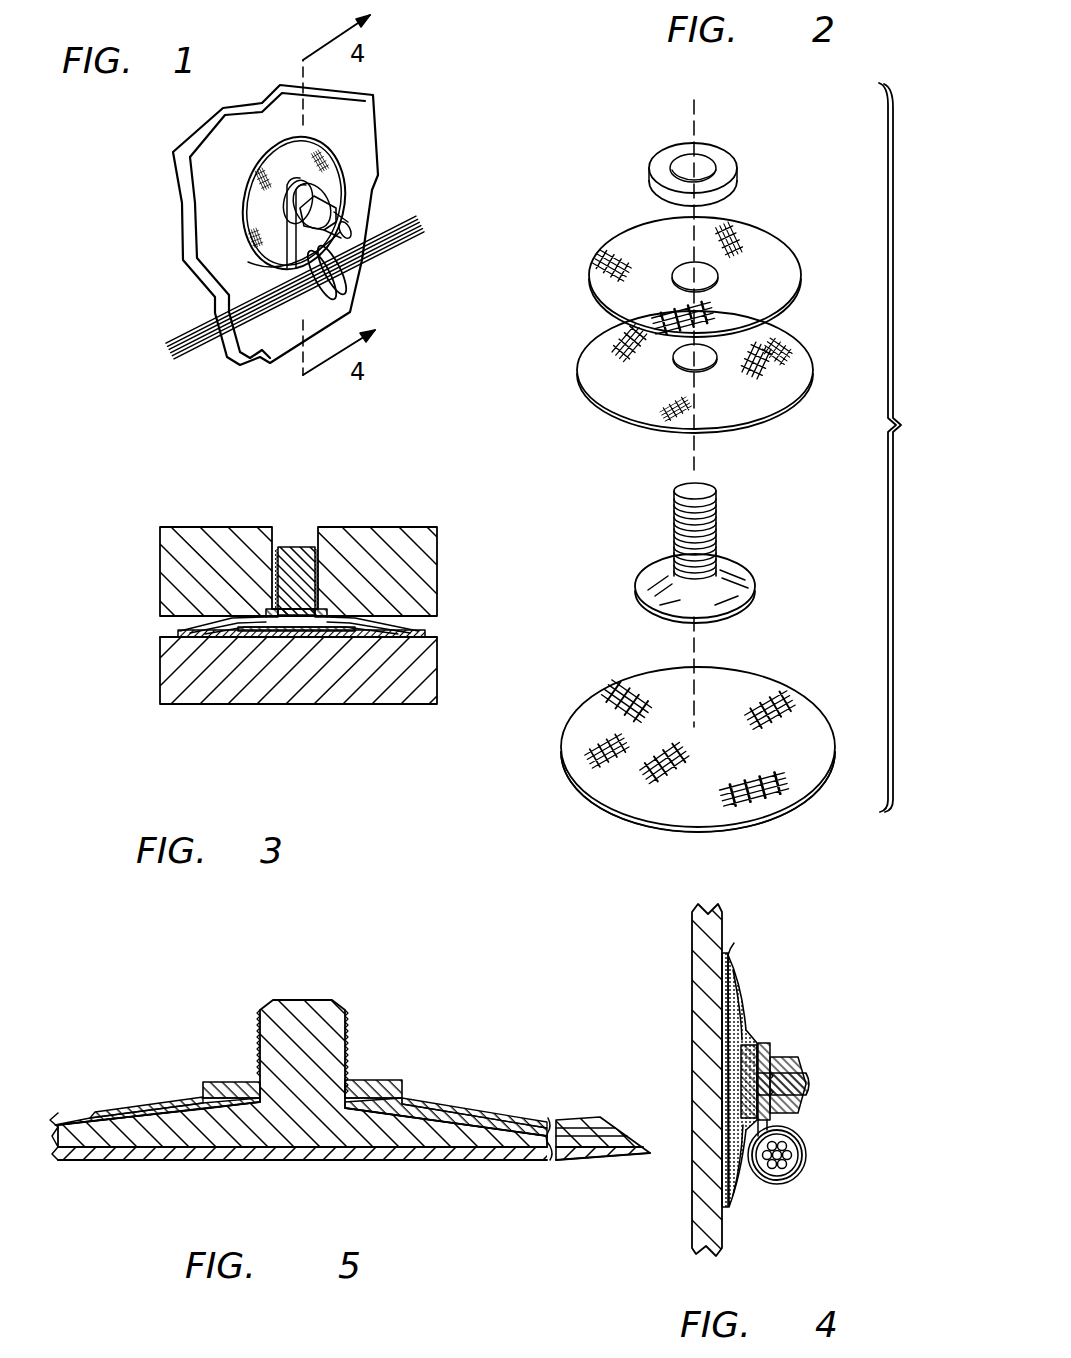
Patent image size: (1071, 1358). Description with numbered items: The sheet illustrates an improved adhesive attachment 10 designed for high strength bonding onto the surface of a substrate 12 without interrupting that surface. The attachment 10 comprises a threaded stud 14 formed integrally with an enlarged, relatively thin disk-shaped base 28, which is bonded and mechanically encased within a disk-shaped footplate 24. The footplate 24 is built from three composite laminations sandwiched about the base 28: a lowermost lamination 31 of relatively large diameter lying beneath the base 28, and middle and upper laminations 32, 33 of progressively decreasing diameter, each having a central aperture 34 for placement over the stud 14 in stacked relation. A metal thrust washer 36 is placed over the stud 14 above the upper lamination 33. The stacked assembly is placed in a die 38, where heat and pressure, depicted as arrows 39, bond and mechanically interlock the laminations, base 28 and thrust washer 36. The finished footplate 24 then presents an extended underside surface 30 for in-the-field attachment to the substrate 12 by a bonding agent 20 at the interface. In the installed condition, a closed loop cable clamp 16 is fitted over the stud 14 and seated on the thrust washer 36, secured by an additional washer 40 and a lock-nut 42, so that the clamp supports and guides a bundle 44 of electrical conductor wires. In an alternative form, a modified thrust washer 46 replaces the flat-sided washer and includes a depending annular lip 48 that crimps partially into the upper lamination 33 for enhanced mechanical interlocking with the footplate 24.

In FIG. 1, the adhesive attachment 10 is at (362, 173).
In FIG. 2, the adhesive attachment 10 is at (870, 402).
In FIG. 3, the adhesive attachment 10 is at (380, 613).
In FIG. 4, the adhesive attachment 10 is at (769, 1019).
In FIG. 1, the substrate 12 is at (197, 202).
In FIG. 4, the substrate 12 is at (712, 927).
In FIG. 1, the threaded stud 14 is at (350, 228).
In FIG. 2, the threaded stud 14 is at (712, 519).
In FIG. 3, the threaded stud 14 is at (318, 547).
In FIG. 5, the threaded stud 14 is at (340, 1018).
In FIG. 4, the threaded stud 14 is at (810, 1083).
In FIG. 1, the cable clamp 16 is at (342, 289).
In FIG. 4, the cable clamp 16 is at (802, 1170).
In FIG. 1, the bonding agent 20 is at (260, 180).
In FIG. 4, the bonding agent 20 is at (727, 953).
In FIG. 1, the footplate 24 is at (330, 155).
In FIG. 2, the footplate 24 is at (596, 812).
In FIG. 5, the footplate 24 is at (525, 1106).
In FIG. 4, the footplate 24 is at (745, 982).
In FIG. 2, the base 28 is at (750, 577).
In FIG. 3, the base 28 is at (255, 629).
In FIG. 5, the base 28 is at (405, 1138).
In FIG. 4, the base 28 is at (740, 1060).
In FIG. 3, the underside surface 30 is at (298, 640).
In FIG. 4, the underside surface 30 is at (723, 998).
In FIG. 2, the lowermost lamination 31 is at (803, 705).
In FIG. 3, the lowermost lamination 31 is at (397, 638).
In FIG. 5, the lowermost lamination 31 is at (475, 1160).
In FIG. 2, the middle lamination 32 is at (782, 393).
In FIG. 3, the middle lamination 32 is at (408, 626).
In FIG. 5, the middle lamination 32 is at (530, 1134).
In FIG. 2, the upper lamination 33 is at (787, 262).
In FIG. 3, the upper lamination 33 is at (222, 618).
In FIG. 5, the upper lamination 33 is at (140, 1110).
In FIG. 2, the central aperture 34 is at (717, 278).
In FIG. 1, the thrust washer 36 is at (248, 225).
In FIG. 2, the thrust washer 36 is at (735, 177).
In FIG. 3, the thrust washer 36 is at (326, 609).
In FIG. 3, the die 38 is at (158, 543).
In FIG. 3, the arrows 39 is at (367, 511).
In FIG. 4, the washer 40 is at (768, 1055).
In FIG. 4, the lock-nut 42 is at (792, 1107).
In FIG. 4, the bundle of electrical conductor wires 44 is at (773, 1174).
In FIG. 5, the modified thrust washer 46 is at (380, 1080).
In FIG. 5, the depending annular lip 48 is at (397, 1103).